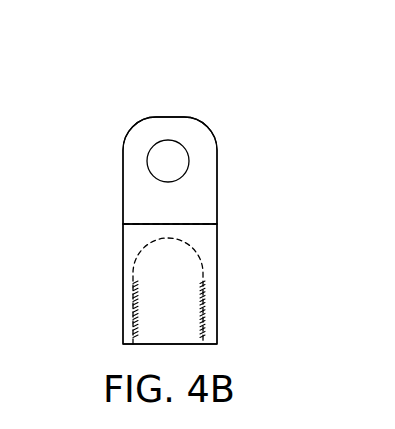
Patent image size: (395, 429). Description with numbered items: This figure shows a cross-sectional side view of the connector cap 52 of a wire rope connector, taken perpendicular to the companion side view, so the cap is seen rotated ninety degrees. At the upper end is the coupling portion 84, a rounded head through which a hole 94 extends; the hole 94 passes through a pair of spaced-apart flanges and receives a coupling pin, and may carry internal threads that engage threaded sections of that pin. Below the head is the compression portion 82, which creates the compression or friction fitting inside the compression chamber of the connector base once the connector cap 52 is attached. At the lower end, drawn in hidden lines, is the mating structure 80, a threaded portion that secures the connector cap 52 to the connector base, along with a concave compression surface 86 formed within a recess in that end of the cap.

The connector cap 52 is at (236, 96).
The coupling portion 84 is at (132, 176).
The hole 94 is at (192, 172).
The compression portion 82 is at (212, 240).
The concave compression surface 86 is at (163, 240).
The mating structure 80 is at (138, 295).